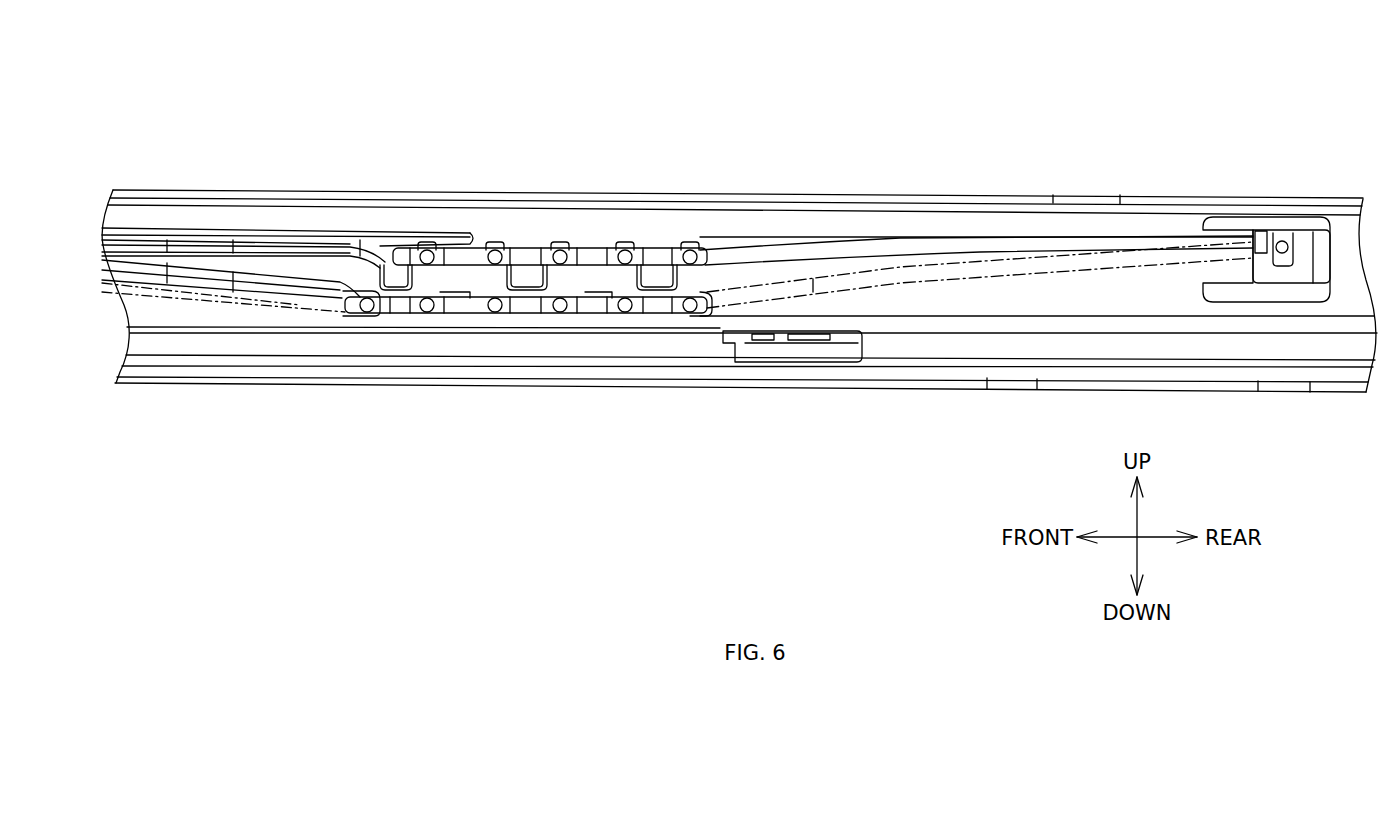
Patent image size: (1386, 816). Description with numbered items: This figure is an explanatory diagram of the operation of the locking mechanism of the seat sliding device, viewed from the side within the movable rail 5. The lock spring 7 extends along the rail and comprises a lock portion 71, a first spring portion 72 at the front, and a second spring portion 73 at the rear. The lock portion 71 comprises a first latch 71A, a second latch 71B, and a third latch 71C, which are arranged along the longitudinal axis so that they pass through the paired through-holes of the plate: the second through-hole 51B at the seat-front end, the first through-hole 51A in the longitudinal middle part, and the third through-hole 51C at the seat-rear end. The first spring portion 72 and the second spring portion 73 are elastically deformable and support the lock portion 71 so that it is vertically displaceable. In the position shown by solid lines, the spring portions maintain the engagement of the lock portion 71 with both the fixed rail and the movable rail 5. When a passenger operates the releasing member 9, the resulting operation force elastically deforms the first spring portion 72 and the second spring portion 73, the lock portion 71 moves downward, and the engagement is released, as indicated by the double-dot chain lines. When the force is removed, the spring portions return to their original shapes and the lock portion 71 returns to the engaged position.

The movable rail 5 is at (883, 191).
The lock spring 7 is at (766, 243).
The releasing member 9 is at (320, 233).
The first spring portion 72 is at (247, 242).
The lock portion 71 is at (377, 93).
The first latch 71A is at (503, 265).
The second latch 71B is at (368, 250).
The third latch 71C is at (630, 265).
The first through-hole 51A is at (493, 243).
The second through-hole 51B is at (362, 285).
The third through-hole 51C is at (590, 285).
The second spring portion 73 is at (987, 236).